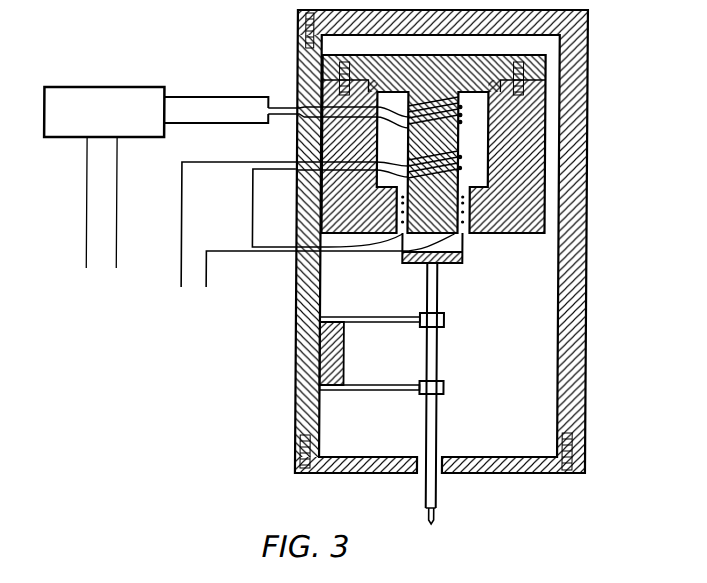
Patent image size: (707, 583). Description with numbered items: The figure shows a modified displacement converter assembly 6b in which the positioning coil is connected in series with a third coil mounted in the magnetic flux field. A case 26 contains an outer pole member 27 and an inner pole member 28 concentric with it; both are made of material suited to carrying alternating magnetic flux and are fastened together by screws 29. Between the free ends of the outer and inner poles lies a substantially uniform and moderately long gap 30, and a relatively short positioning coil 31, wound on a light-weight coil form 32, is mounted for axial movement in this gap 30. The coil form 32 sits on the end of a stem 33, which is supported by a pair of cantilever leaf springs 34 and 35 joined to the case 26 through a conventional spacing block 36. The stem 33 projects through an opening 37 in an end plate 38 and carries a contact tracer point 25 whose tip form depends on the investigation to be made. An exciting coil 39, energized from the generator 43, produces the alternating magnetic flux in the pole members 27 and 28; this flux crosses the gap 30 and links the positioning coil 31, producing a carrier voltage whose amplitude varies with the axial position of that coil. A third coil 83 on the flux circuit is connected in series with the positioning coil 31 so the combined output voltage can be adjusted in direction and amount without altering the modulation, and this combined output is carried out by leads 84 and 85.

The converter assembly 6b is at (589, 26).
The contact tracer point 25 is at (437, 523).
The case 26 is at (586, 333).
The outer pole member 27 is at (538, 98).
The inner pole member 28 is at (461, 135).
The screws 29 is at (524, 55).
The gap 30 is at (472, 188).
The positioning coil 31 is at (469, 222).
The coil form 32 is at (465, 246).
The stem 33 is at (440, 366).
The cantilever leaf spring 34 is at (378, 318).
The cantilever leaf spring 35 is at (410, 389).
The spacing block 36 is at (348, 358).
The opening 37 is at (441, 458).
The end plate 38 is at (503, 474).
The exciting coil 39 is at (461, 107).
The generator 43 is at (56, 86).
The third coil 83 is at (461, 168).
The lead 84 is at (183, 275).
The lead 85 is at (208, 275).